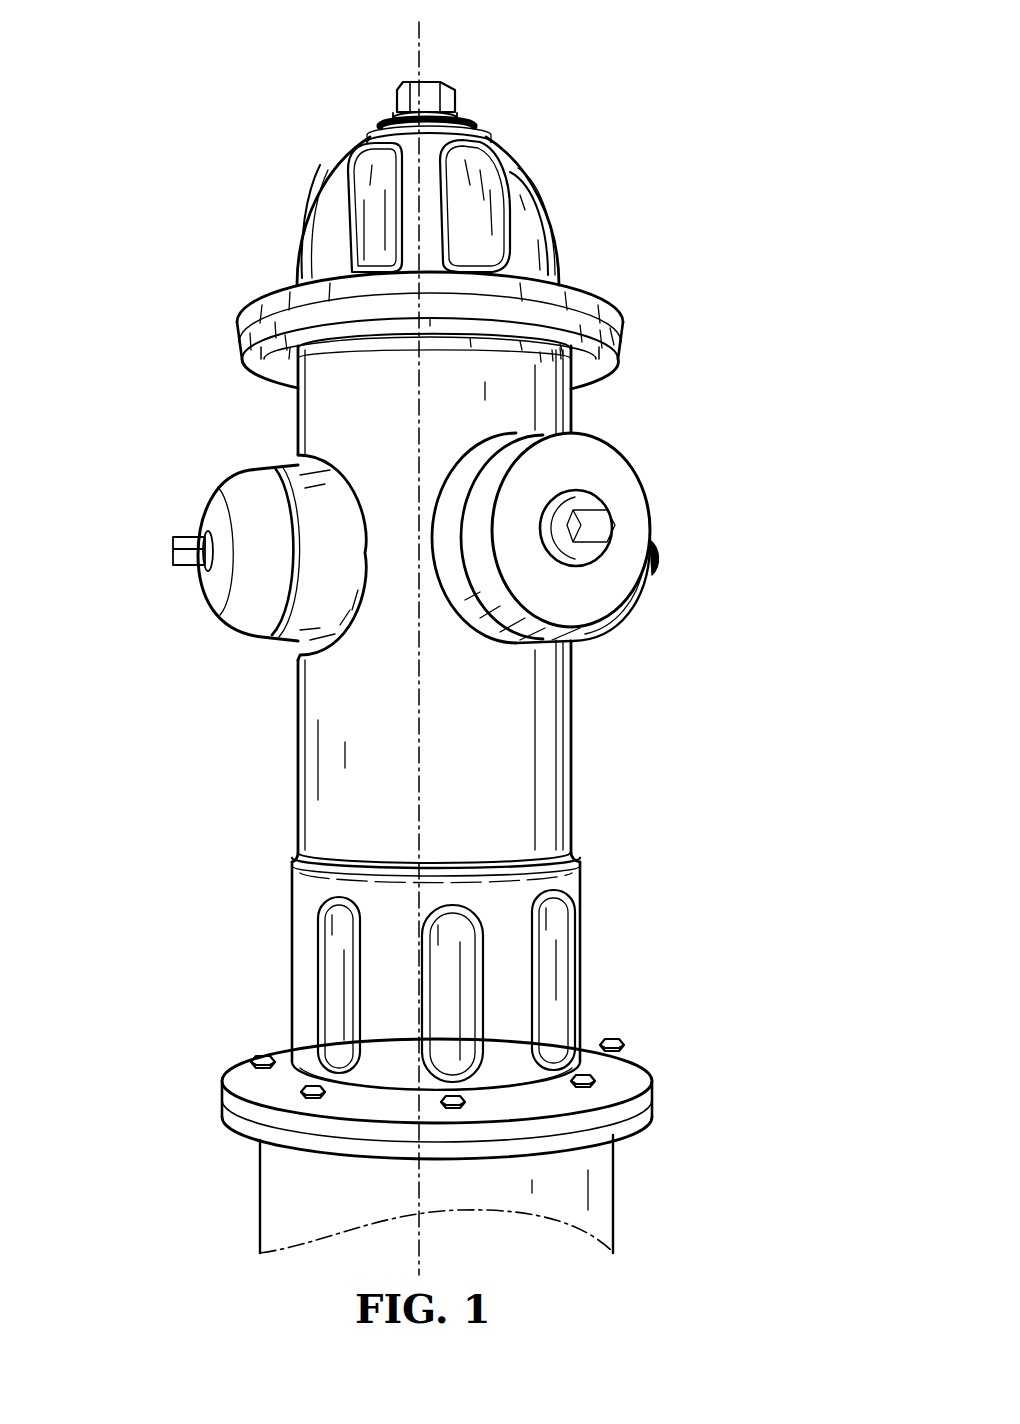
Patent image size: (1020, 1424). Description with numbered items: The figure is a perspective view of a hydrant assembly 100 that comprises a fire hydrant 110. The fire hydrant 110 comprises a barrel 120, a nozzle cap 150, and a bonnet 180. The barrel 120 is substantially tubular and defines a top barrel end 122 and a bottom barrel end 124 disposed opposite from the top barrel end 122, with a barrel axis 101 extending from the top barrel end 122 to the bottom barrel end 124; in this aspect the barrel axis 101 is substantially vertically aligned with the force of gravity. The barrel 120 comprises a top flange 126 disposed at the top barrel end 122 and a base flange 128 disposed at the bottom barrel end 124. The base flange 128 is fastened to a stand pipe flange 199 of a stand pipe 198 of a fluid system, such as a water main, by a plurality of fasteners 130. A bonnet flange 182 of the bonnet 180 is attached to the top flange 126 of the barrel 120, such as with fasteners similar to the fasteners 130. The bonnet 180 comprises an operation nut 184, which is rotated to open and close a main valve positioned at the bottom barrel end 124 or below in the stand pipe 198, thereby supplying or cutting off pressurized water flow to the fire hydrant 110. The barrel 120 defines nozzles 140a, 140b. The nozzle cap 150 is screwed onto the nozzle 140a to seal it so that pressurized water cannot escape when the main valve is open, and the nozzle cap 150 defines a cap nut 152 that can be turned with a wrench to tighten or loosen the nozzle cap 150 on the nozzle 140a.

The hydrant assembly 100 is at (176, 91).
The barrel axis 101 is at (420, 40).
The fire hydrant 110 is at (550, 762).
The barrel 120 is at (322, 748).
The top barrel end 122 is at (613, 325).
The bottom barrel end 124 is at (652, 1090).
The top flange 126 is at (240, 338).
The base flange 128 is at (623, 1067).
The fasteners 130 is at (450, 1098).
The nozzle 140a is at (488, 618).
The nozzle 140b is at (332, 612).
The nozzle cap 150 is at (618, 480).
The cap nut 152 is at (598, 525).
The bonnet 180 is at (510, 176).
The bonnet flange 182 is at (260, 297).
The operation nut 184 is at (447, 98).
The stand pipe 198 is at (615, 1195).
The stand pipe flange 199 is at (648, 1113).